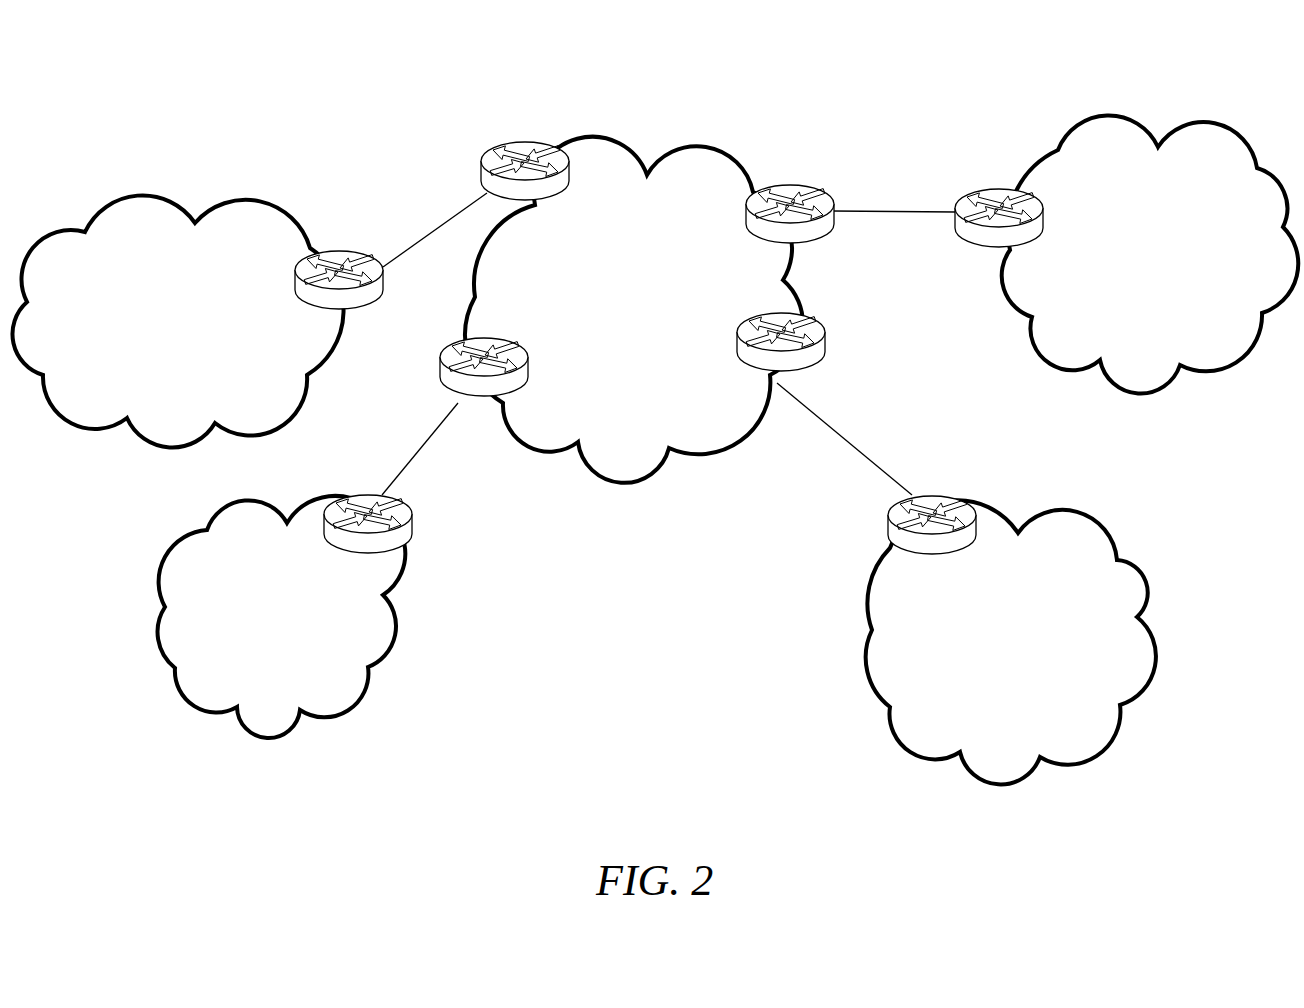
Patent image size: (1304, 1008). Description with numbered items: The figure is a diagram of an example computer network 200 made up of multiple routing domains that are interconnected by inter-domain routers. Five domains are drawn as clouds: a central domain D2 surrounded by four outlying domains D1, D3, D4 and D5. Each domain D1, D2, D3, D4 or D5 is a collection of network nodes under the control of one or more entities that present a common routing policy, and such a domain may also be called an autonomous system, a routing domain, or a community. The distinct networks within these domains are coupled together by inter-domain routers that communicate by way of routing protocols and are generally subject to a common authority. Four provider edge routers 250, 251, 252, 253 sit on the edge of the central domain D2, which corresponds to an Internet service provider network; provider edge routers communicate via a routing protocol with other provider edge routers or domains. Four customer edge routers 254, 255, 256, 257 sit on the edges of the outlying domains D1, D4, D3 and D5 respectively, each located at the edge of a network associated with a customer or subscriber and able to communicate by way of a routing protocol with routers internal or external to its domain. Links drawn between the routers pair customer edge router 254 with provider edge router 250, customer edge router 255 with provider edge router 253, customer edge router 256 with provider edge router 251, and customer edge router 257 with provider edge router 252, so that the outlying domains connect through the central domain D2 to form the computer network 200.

The computer network 200 is at (655, 418).
The provider edge router 250 is at (525, 174).
The provider edge router 251 is at (790, 217).
The provider edge router 252 is at (781, 345).
The provider edge router 253 is at (484, 370).
The customer edge router 254 is at (339, 283).
The customer edge router 255 is at (368, 527).
The customer edge router 256 is at (999, 221).
The customer edge router 257 is at (932, 528).
The domain D1 is at (170, 324).
The domain D2 is at (612, 268).
The domain D3 is at (1129, 266).
The domain D4 is at (255, 634).
The domain D5 is at (1007, 656).